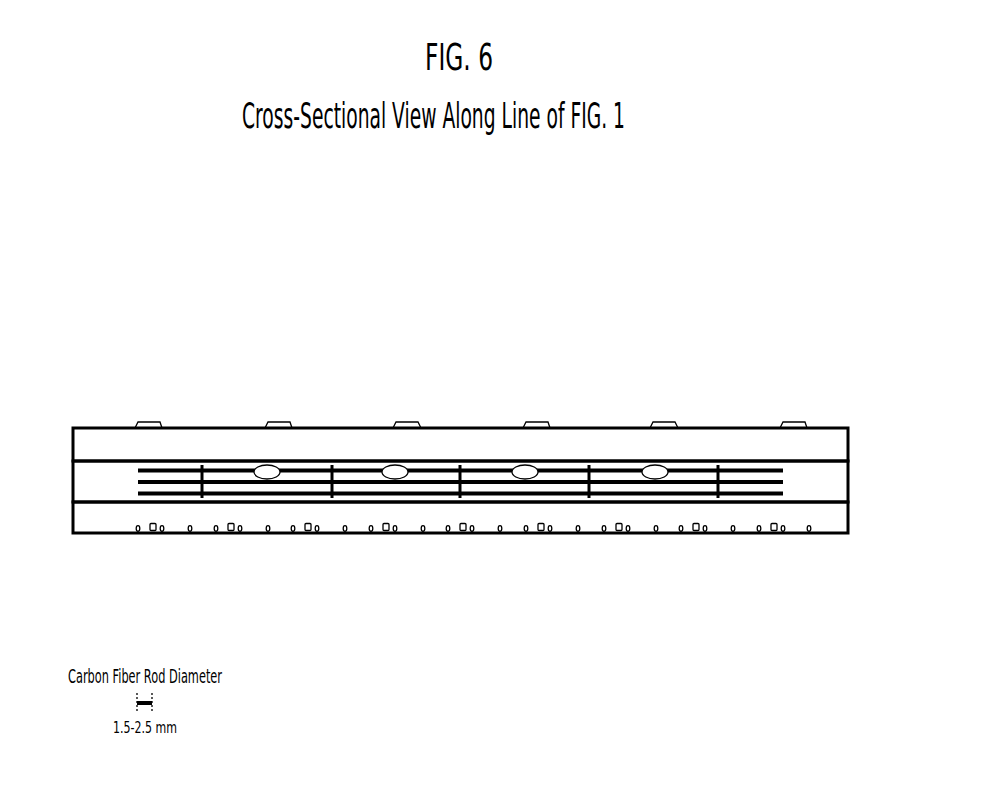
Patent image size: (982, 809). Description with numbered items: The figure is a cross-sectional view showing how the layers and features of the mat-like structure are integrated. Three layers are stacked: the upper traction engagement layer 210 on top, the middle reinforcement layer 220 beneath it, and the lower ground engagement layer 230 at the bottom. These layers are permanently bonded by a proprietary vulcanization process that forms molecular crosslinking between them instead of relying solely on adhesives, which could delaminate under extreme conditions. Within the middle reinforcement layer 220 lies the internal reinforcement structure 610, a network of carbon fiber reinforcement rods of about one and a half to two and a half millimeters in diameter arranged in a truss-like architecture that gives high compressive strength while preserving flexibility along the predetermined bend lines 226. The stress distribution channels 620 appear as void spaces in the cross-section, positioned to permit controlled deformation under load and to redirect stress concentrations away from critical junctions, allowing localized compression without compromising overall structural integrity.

The upper traction engagement layer 210 is at (435, 444).
The middle reinforcement layer 220 is at (435, 481).
The lower ground engagement layer 230 is at (435, 517).
The predetermined bend lines 226 is at (195, 527).
The internal reinforcement structure 610 is at (531, 499).
The stress distribution channels 620 is at (294, 405).